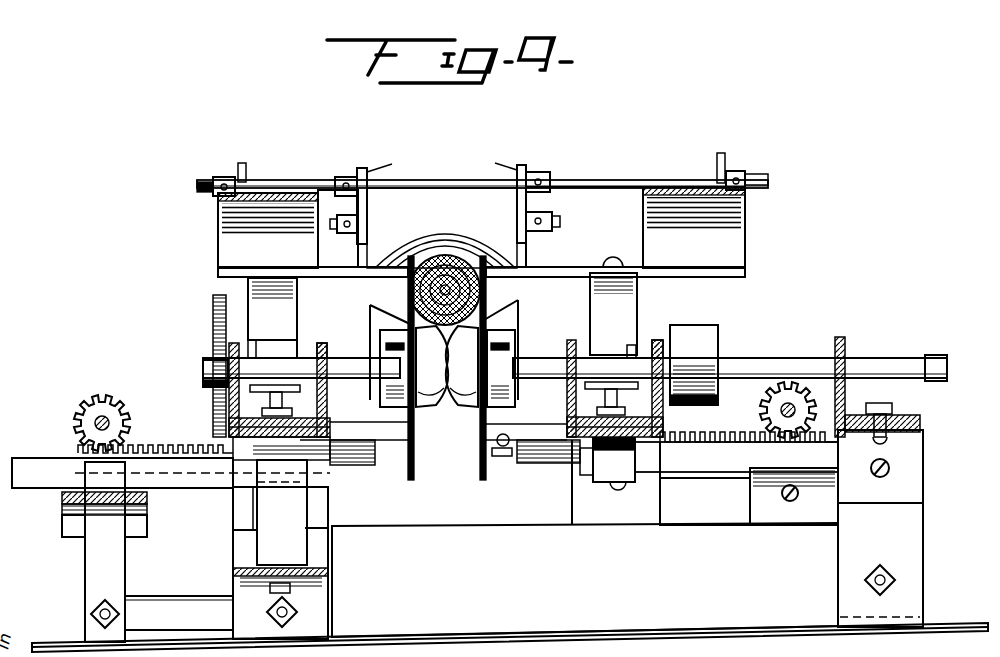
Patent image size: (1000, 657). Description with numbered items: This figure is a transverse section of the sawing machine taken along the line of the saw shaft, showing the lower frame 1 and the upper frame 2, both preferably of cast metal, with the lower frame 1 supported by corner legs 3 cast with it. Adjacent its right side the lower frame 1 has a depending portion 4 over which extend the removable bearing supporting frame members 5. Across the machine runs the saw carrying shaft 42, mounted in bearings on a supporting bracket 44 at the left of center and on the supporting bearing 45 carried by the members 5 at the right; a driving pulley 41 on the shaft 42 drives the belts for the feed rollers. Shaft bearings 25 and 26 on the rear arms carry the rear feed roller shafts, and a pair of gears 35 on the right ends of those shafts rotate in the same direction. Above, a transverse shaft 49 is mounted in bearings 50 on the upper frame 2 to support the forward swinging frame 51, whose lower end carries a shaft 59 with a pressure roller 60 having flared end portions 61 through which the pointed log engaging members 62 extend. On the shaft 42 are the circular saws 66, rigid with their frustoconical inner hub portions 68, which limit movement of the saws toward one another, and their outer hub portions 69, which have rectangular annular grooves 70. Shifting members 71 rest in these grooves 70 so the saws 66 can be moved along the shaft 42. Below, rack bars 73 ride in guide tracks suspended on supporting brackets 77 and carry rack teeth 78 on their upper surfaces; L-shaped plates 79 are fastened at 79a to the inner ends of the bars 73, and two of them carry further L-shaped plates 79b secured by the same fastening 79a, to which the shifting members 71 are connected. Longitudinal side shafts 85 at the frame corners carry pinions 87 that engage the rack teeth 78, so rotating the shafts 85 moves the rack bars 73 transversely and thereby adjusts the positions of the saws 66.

The lower frame 1 is at (924, 424).
The upper frame 2 is at (217, 207).
The corner legs 3 is at (332, 590).
The depending portion 4 is at (330, 553).
The bearing supporting frame members 5 is at (247, 437).
The shaft bearings 25 is at (256, 345).
The shaft bearings 26 is at (630, 344).
The gears 35 is at (213, 323).
The driving pulley 41 is at (720, 334).
The saw carrying shaft 42 is at (540, 356).
The supporting bracket 44 is at (658, 340).
The supporting bearing 45 is at (320, 345).
The transverse shaft 49 is at (603, 178).
The bearings 50 is at (242, 172).
The forward swinging frame 51 is at (362, 238).
The shaft 59 is at (556, 221).
The pressure roller 60 is at (447, 200).
The flared end portions 61 is at (367, 167).
The pointed log engaging members 62 is at (407, 178).
The circular saws 66 is at (392, 428).
The hub portions 68 is at (440, 403).
The hub portions 69 is at (383, 400).
The annular grooves 70 is at (393, 410).
The shifting members 71 is at (400, 338).
The rack bars 73 is at (160, 447).
The supporting brackets 77 is at (303, 493).
The rack teeth 78 is at (150, 447).
The L-shaped plates 79 is at (360, 455).
The fastening 79a is at (253, 473).
The L-shaped plates 79b is at (346, 388).
The side shafts 85 is at (96, 424).
The pinions 87 is at (110, 403).